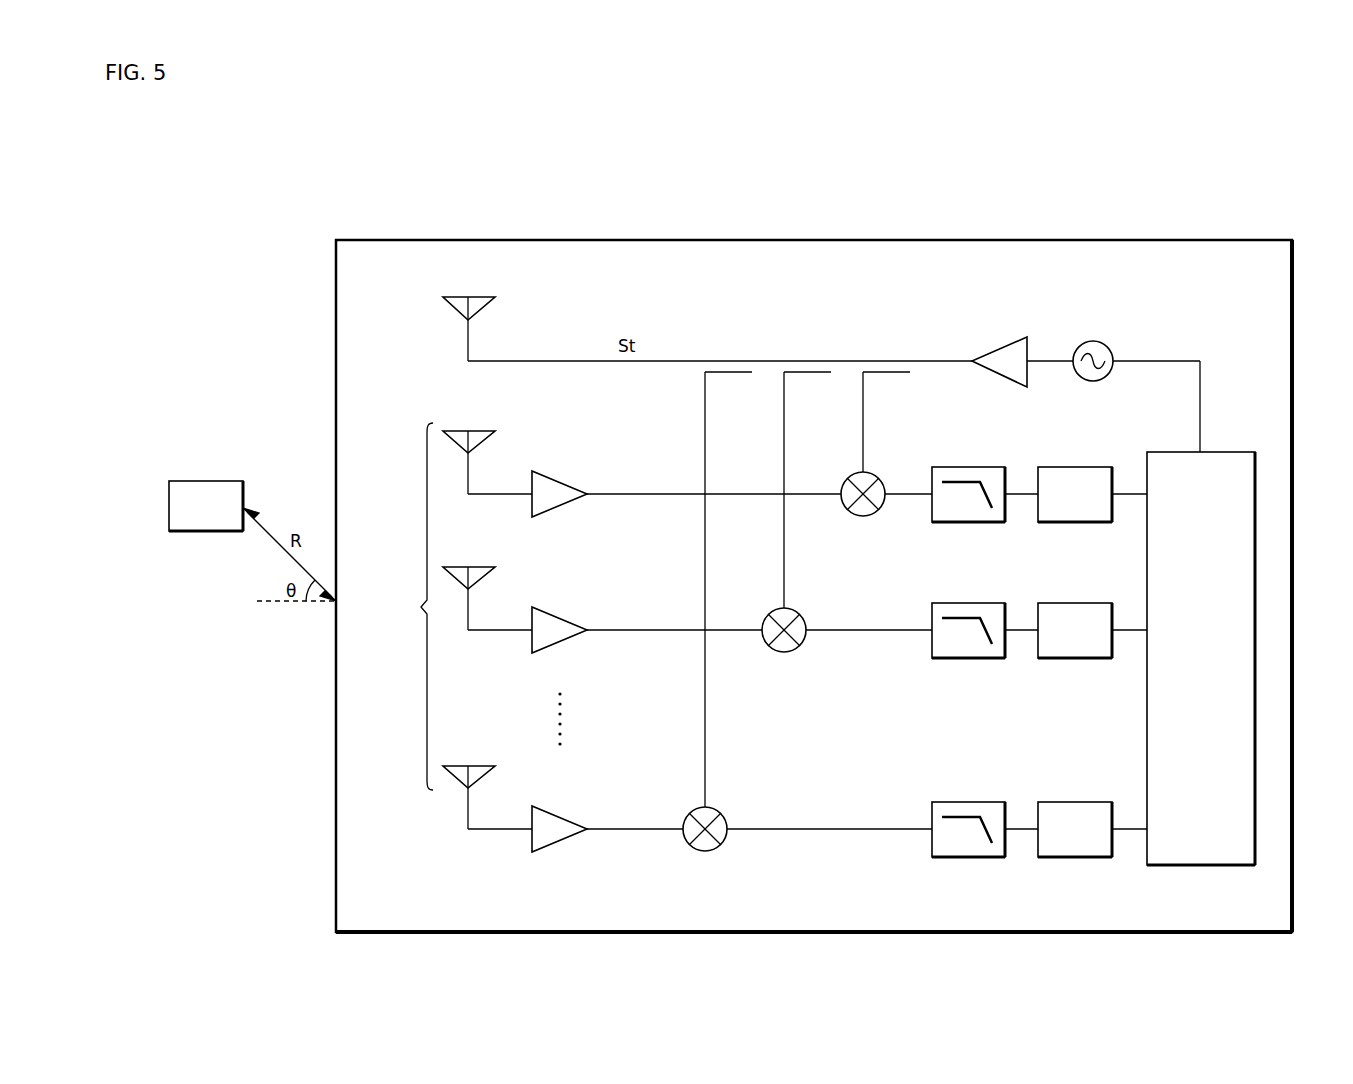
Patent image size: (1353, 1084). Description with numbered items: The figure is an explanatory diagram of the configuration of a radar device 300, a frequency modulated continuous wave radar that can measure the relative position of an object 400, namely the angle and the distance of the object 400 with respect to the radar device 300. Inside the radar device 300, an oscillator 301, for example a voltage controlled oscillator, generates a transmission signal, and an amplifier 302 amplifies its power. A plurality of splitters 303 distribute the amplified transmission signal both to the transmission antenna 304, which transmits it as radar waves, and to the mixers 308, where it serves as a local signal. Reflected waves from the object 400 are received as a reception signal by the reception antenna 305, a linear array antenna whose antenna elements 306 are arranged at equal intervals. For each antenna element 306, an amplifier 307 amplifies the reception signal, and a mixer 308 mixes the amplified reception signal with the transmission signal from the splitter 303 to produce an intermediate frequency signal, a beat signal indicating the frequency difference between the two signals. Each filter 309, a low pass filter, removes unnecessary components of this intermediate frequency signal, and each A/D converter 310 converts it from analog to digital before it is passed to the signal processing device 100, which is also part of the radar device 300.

The signal processing device 100 is at (1228, 452).
The radar device 300 is at (1142, 240).
The oscillator 301 is at (1097, 383).
The amplifier 302 is at (995, 380).
The splitter 303 is at (718, 361).
The transmission antenna 304 is at (489, 297).
The reception antenna 305 is at (404, 606).
The antenna element 306 is at (489, 431).
The amplifier 307 is at (565, 485).
The mixer 308 is at (866, 516).
The filter 309 is at (970, 522).
The A/D converter 310 is at (1078, 522).
The object 400 is at (200, 481).